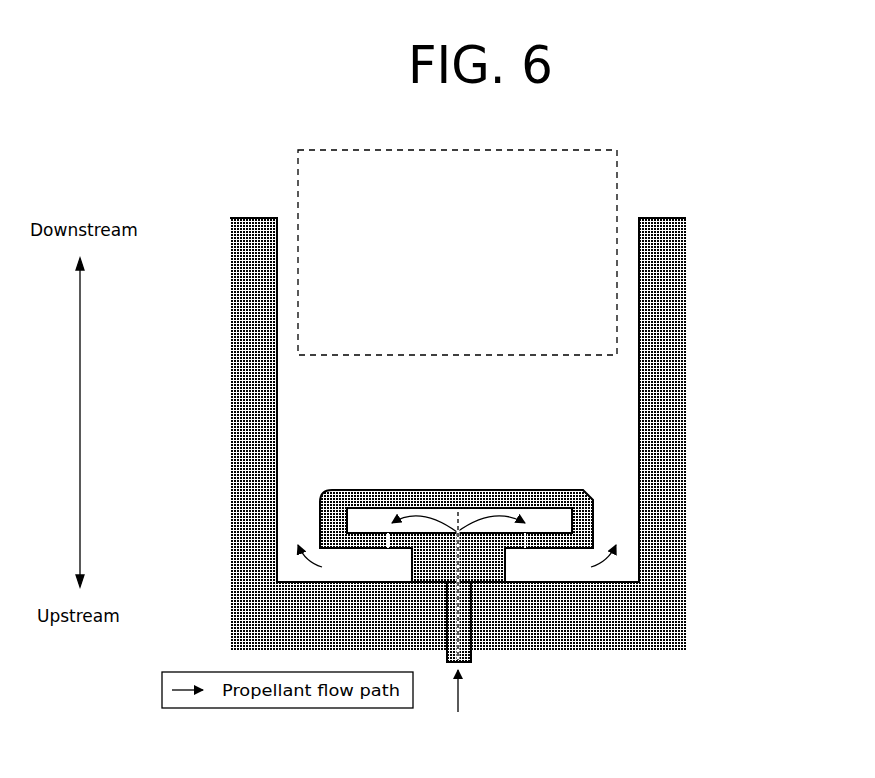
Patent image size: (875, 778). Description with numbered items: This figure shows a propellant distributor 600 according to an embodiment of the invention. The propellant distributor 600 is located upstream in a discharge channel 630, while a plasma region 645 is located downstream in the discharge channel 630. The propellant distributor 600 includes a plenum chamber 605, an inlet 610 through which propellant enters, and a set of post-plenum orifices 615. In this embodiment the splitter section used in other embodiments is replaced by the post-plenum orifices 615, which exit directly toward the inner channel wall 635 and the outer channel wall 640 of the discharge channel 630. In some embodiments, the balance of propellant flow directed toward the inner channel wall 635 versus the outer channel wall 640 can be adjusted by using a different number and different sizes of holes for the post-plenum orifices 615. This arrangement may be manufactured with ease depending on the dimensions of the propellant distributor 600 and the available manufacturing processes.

The propellant distributor 600 is at (567, 524).
The plenum chamber 605 is at (371, 518).
The inlet 610 is at (478, 670).
The post-plenum orifices 615 is at (522, 518).
The discharge channel 630 is at (655, 183).
The inner channel wall 635 is at (203, 228).
The outer channel wall 640 is at (685, 241).
The plasma region 645 is at (457, 252).